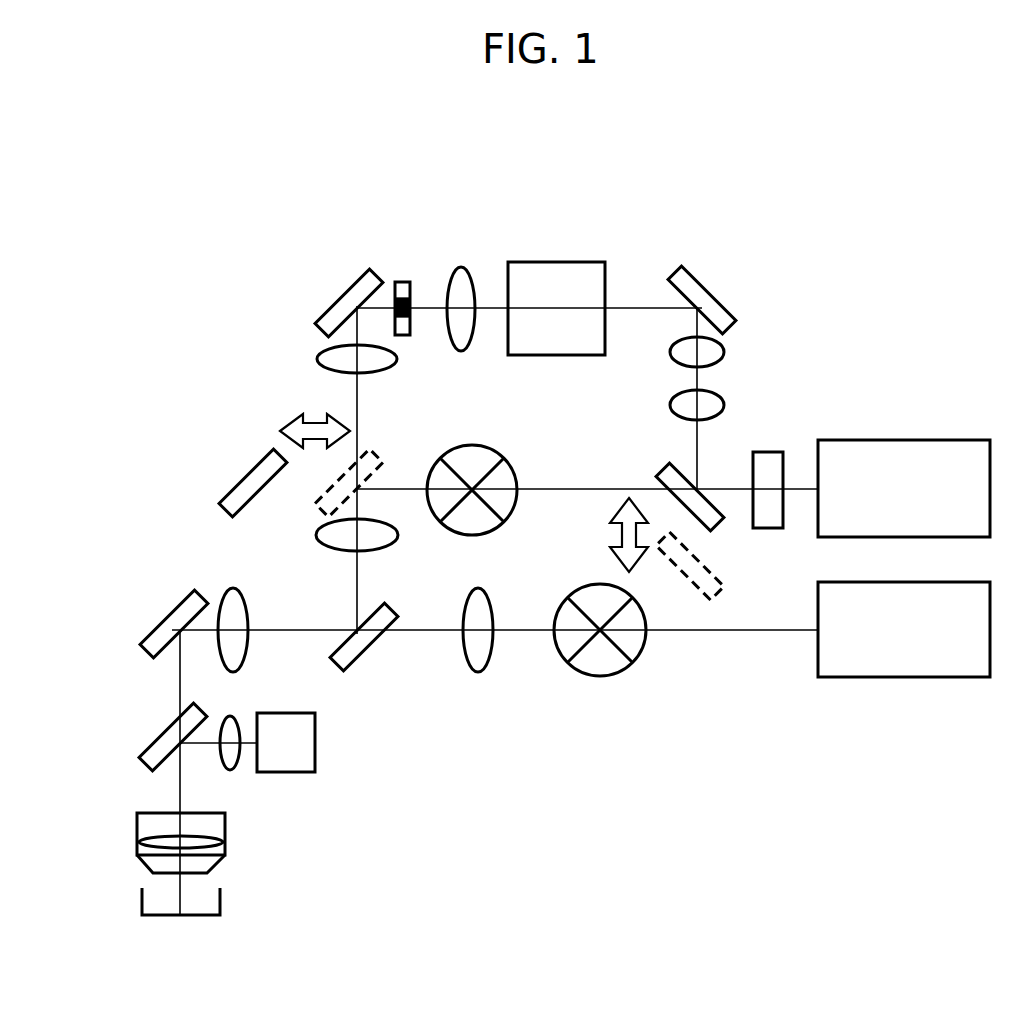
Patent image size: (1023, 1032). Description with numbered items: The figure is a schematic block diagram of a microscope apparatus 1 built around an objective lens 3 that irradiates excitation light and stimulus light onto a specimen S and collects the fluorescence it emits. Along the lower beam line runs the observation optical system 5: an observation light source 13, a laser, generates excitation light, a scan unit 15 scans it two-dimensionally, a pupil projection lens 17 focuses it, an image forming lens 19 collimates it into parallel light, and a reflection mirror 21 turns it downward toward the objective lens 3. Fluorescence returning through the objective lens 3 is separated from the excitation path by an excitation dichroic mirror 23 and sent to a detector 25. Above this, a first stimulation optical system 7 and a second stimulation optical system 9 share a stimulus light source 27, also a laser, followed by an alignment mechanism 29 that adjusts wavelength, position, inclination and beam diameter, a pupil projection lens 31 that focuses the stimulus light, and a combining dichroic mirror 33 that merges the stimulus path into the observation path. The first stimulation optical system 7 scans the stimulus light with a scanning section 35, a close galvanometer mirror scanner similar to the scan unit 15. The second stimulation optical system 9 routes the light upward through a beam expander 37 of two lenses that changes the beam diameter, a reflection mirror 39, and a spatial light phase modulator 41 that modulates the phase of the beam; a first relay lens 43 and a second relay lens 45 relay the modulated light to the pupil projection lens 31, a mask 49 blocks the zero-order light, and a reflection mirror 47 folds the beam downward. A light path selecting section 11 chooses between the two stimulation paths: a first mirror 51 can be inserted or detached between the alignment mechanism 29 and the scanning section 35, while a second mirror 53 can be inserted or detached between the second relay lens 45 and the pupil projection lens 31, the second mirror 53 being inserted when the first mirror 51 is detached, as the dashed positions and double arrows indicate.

The microscope apparatus 1 is at (93, 180).
The objective lens 3 is at (136, 835).
The observation optical system 5 is at (702, 722).
The first stimulation optical system 7 is at (582, 444).
The second stimulation optical system 9 is at (648, 227).
The light path selecting section 11 is at (188, 470).
The observation light source 13 is at (903, 678).
The scan unit 15 is at (598, 678).
The pupil projection lens 17 is at (478, 674).
The image forming lens 19 is at (249, 608).
The reflection mirror 21 is at (158, 621).
The excitation dichroic mirror 23 is at (139, 742).
The detector 25 is at (287, 773).
The stimulus light source 27 is at (912, 439).
The alignment mechanism 29 is at (770, 451).
The pupil projection lens 31 is at (316, 531).
The combining dichroic mirror 33 is at (358, 661).
The scanning section 35 is at (470, 446).
The beam expander 37 is at (728, 338).
The reflection mirror 39 is at (724, 294).
The spatial light phase modulator 41 is at (557, 261).
The first relay lens 43 is at (460, 266).
The second relay lens 45 is at (316, 358).
The reflection mirror 47 is at (347, 274).
The mask 49 is at (403, 280).
The first mirror 51 is at (722, 527).
The second mirror 53 is at (252, 463).
The specimen S is at (141, 902).